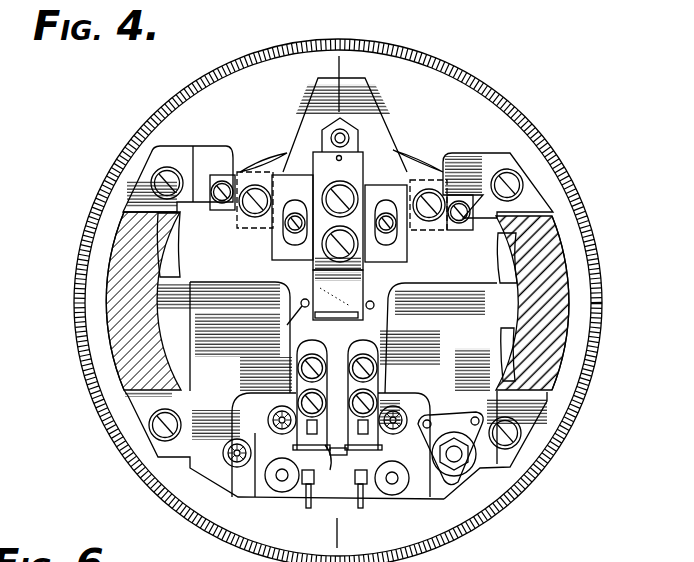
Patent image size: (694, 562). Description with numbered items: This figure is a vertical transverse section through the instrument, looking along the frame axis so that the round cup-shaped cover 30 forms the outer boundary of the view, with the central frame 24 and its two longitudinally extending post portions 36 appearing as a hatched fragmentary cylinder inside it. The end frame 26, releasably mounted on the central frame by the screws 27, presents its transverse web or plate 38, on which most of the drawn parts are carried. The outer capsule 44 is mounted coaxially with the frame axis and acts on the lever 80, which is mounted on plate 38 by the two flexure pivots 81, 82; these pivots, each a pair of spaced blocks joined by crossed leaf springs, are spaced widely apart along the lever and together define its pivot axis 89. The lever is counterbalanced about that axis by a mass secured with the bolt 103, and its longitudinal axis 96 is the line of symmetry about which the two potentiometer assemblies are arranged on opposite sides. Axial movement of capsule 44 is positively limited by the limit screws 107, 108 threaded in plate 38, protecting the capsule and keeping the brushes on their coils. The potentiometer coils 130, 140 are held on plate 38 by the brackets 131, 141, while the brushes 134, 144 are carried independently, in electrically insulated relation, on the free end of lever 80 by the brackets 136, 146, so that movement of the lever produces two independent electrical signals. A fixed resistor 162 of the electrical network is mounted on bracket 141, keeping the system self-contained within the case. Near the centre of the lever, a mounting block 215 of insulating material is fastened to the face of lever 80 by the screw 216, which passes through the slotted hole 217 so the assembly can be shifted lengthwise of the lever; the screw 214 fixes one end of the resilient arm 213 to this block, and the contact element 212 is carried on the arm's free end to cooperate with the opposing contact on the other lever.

The longitudinal axis 96 is at (339, 67).
The lever 80 is at (308, 107).
The bolt 103 is at (328, 136).
The flexure pivot 81 is at (262, 168).
The outer capsule 44 is at (406, 142).
The end frame 26 is at (442, 144).
The cover 30 is at (524, 104).
The screws 27 is at (523, 181).
The flexure pivot 82 is at (446, 193).
The slotted hole 217 is at (318, 200).
The screw 216 is at (288, 222).
The mounting block 215 is at (304, 258).
The screw 214 is at (328, 262).
The resilient arm 213 is at (362, 278).
The contact element 212 is at (360, 308).
The limit screw 107 is at (375, 308).
The limit screw 108 is at (233, 337).
The pivot axis 89 is at (197, 202).
The transverse web 38 is at (481, 304).
The central frame 24 is at (575, 275).
The post portions 36 is at (566, 320).
The bracket 131 is at (226, 484).
The potentiometer coil 130 is at (278, 488).
The brush 134 is at (304, 490).
The bracket 136 is at (324, 462).
The bracket 146 is at (352, 480).
The brush 144 is at (366, 490).
The potentiometer coil 140 is at (398, 492).
The bracket 141 is at (439, 491).
The fixed resistor 162 is at (448, 472).